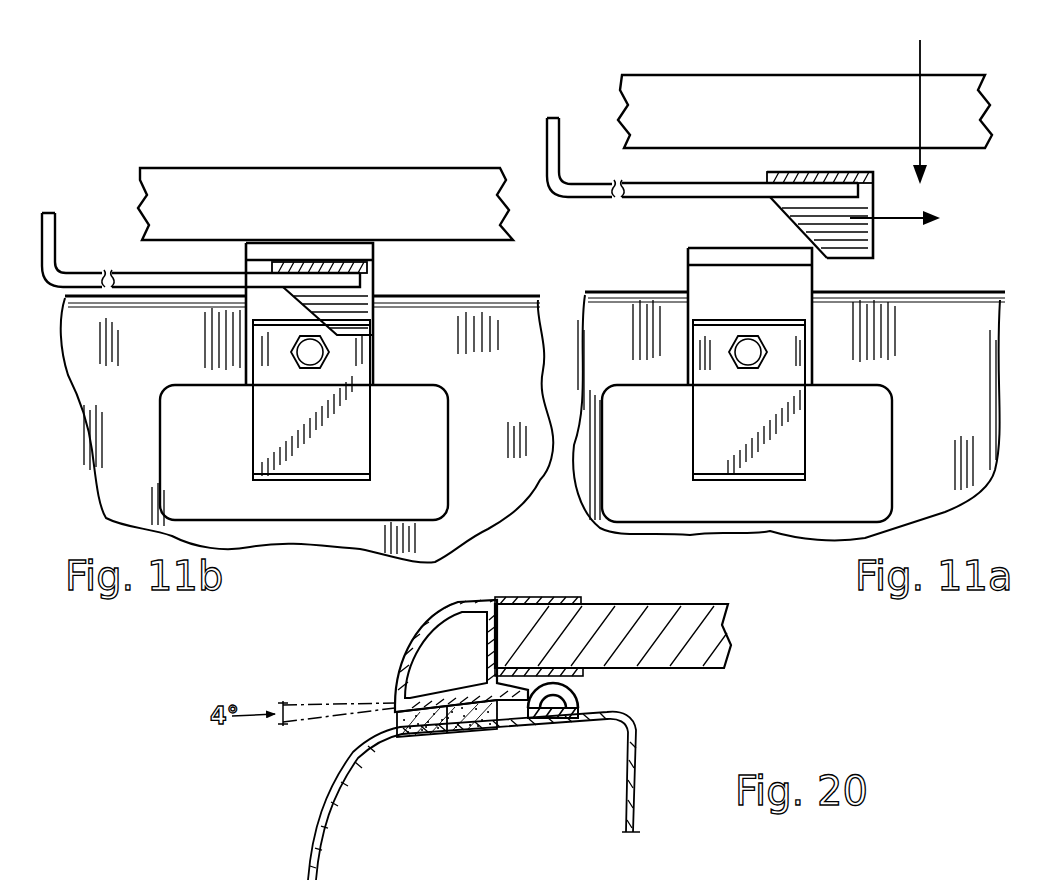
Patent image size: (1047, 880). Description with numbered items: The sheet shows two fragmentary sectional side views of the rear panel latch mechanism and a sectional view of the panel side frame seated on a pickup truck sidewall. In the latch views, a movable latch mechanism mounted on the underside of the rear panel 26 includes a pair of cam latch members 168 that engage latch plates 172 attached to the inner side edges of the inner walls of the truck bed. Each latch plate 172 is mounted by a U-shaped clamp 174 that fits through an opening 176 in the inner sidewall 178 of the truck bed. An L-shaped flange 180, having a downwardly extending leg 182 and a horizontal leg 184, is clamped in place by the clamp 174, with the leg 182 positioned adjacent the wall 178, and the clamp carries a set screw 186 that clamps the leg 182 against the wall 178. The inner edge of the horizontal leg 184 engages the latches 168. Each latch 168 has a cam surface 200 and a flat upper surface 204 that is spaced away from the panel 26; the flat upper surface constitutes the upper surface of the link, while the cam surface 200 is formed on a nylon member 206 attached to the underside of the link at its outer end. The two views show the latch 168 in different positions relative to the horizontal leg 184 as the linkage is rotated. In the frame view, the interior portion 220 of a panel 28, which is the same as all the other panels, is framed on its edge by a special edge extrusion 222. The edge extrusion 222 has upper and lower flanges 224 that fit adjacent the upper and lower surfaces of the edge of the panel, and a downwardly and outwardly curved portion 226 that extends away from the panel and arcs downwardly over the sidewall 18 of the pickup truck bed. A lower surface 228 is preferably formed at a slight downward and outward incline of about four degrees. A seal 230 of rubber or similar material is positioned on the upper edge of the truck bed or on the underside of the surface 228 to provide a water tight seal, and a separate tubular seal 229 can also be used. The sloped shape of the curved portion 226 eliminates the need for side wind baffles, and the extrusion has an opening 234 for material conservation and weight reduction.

In FIG. 20, the sidewall 18 is at (320, 816).
In FIG. 11B, the rear panel 26 is at (308, 217).
In FIG. 11A, the rear panel 26 is at (817, 116).
In FIG. 20, the panel 28 is at (624, 598).
In FIG. 11B, the cam latch member 168 is at (385, 292).
In FIG. 11A, the cam latch member 168 is at (888, 203).
In FIG. 11B, the latch plate 172 is at (222, 365).
In FIG. 11A, the latch plate 172 is at (660, 367).
In FIG. 11B, the U-shaped clamp 174 is at (340, 437).
In FIG. 11A, the U-shaped clamp 174 is at (790, 450).
In FIG. 11B, the opening 176 is at (450, 412).
In FIG. 11A, the opening 176 is at (896, 412).
In FIG. 11B, the inner sidewall 178 is at (520, 349).
In FIG. 11A, the inner sidewall 178 is at (977, 349).
In FIG. 11A, the L-shaped flange 180 is at (686, 283).
In FIG. 11B, the downwardly extending leg 182 is at (252, 302).
In FIG. 11A, the downwardly extending leg 182 is at (700, 305).
In FIG. 11B, the horizontal leg 184 is at (374, 258).
In FIG. 11A, the horizontal leg 184 is at (722, 250).
In FIG. 11B, the set screw 186 is at (332, 352).
In FIG. 11A, the set screw 186 is at (770, 352).
In FIG. 11B, the cam surface 200 is at (300, 323).
In FIG. 11A, the cam surface 200 is at (818, 222).
In FIG. 11B, the flat upper surface 204 is at (333, 265).
In FIG. 11A, the flat upper surface 204 is at (802, 177).
In FIG. 11B, the nylon member 206 is at (356, 302).
In FIG. 11A, the nylon member 206 is at (864, 237).
In FIG. 20, the interior portion 220 is at (650, 608).
In FIG. 20, the edge extrusion 222 is at (505, 588).
In FIG. 20, the upper and lower flanges 224 is at (550, 597).
In FIG. 20, the downwardly and outwardly curved portion 226 is at (437, 620).
In FIG. 20, the lower surface 228 is at (448, 736).
In FIG. 20, the tubular seal 229 is at (580, 692).
In FIG. 20, the seal 230 is at (428, 738).
In FIG. 20, the opening 234 is at (437, 653).